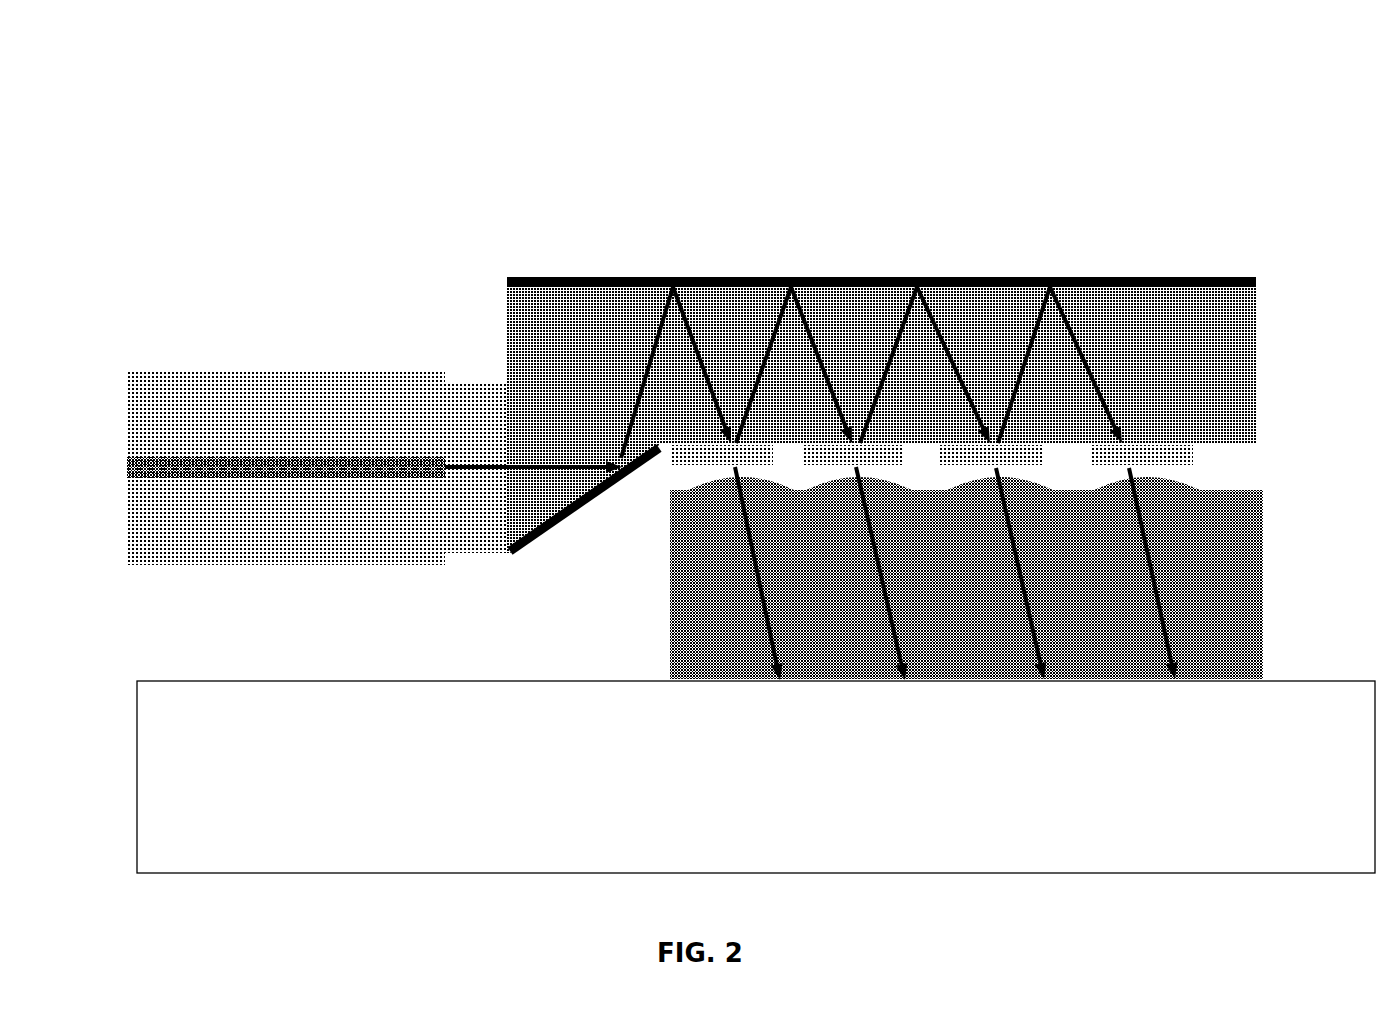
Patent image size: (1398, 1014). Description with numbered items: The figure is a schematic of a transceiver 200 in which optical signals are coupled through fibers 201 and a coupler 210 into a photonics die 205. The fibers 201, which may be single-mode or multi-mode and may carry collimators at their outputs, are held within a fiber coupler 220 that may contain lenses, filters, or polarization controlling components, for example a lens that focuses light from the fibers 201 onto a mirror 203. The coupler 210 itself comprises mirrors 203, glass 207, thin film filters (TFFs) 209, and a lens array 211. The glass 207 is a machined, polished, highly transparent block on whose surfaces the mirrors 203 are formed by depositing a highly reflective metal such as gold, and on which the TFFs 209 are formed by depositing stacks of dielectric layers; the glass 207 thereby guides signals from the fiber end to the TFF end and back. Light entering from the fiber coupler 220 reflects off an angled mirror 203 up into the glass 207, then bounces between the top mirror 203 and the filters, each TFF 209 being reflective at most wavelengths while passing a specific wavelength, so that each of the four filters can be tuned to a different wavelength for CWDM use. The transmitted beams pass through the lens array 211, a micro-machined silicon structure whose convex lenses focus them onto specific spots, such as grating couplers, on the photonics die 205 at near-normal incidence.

The transceiver 200 is at (196, 130).
The fibers 201 is at (163, 457).
The mirror 203 is at (520, 582).
The photonics die 205 is at (793, 795).
The glass 207 is at (881, 416).
The thin film filters (TFFs) 209 is at (1209, 455).
The coupler 210 is at (877, 382).
The lens array 211 is at (672, 515).
The fiber coupler 220 is at (397, 326).